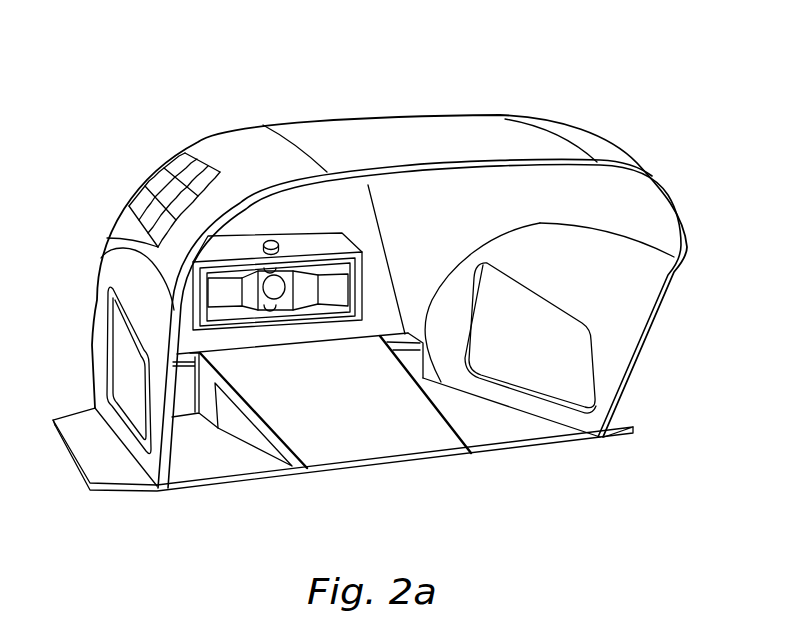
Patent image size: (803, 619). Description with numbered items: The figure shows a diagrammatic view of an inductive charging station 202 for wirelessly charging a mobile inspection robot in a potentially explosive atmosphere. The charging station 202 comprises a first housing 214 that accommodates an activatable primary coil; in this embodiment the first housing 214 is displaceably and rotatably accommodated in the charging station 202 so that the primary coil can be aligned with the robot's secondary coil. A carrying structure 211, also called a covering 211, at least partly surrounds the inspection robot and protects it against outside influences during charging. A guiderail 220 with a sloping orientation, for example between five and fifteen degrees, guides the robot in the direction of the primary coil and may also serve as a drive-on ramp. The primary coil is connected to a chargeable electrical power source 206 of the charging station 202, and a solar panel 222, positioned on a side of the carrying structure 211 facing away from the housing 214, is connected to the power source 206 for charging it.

The inductive charging station 202 is at (634, 117).
The electrical power source 206 is at (443, 167).
The carrying structure 211 is at (340, 138).
The first housing 214 is at (340, 285).
The guiderail 220 is at (342, 405).
The solar panel 222 is at (155, 192).